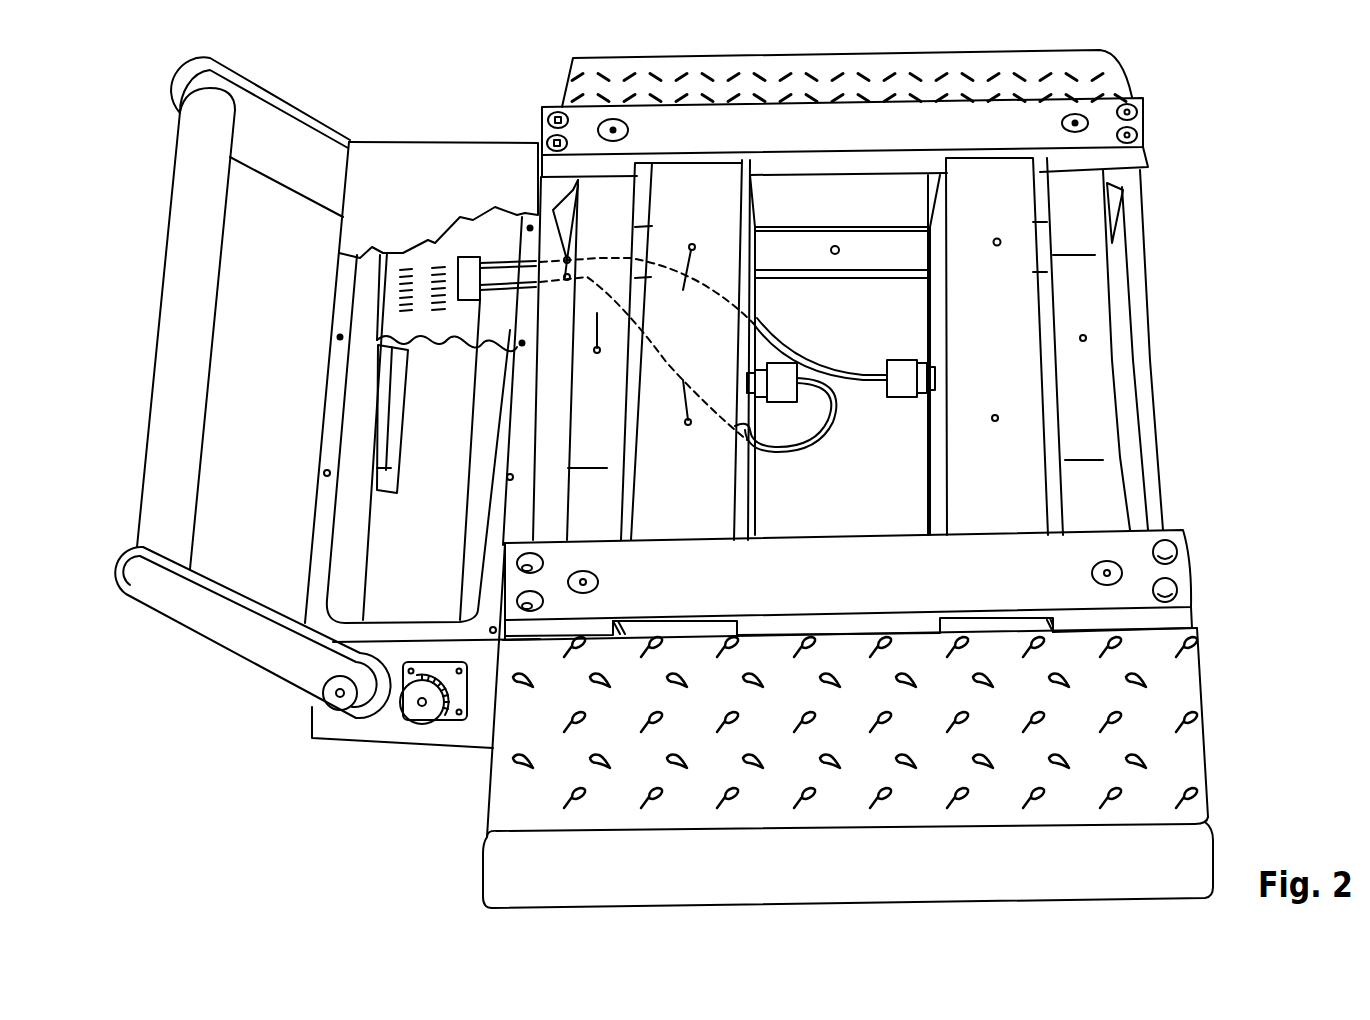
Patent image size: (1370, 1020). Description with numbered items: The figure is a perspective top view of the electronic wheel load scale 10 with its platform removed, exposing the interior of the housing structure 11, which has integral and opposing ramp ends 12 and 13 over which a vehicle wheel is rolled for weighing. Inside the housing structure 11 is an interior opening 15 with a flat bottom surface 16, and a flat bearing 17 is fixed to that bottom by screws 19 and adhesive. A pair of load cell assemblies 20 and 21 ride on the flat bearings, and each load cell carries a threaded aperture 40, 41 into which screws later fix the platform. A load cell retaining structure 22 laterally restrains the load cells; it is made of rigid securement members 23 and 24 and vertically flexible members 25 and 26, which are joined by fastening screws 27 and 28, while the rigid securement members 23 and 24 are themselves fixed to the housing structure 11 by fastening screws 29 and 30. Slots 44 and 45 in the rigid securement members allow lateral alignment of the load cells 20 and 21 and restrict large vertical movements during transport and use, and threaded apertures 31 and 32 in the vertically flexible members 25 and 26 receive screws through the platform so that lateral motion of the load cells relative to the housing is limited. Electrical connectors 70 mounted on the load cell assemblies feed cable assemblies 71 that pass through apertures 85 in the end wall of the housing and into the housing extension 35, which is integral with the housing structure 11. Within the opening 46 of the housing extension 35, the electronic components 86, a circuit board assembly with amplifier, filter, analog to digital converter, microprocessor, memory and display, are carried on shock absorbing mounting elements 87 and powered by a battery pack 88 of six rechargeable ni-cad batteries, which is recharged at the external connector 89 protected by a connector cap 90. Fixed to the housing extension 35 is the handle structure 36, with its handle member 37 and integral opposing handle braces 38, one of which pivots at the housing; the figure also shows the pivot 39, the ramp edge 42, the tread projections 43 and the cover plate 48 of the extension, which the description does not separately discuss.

The wheel load scale 10 is at (1201, 229).
The housing structure 11 is at (1150, 408).
The ramp end 12 is at (818, 55).
The ramp end 13 is at (1190, 807).
The interior opening 15 is at (802, 464).
The flat bottom surface 16 is at (848, 480).
The flat bearing 17 is at (875, 258).
The screws 19 is at (833, 254).
The load cell assembly 20 is at (661, 505).
The load cell assembly 21 is at (989, 480).
The load cell retaining structure 22 is at (1186, 508).
The rigid securement member 23 is at (1130, 100).
The rigid securement member 24 is at (816, 593).
The vertically flexible member 25 is at (583, 425).
The vertically flexible member 26 is at (1093, 300).
The fastening screw 27 is at (629, 130).
The fastening screw 28 is at (1092, 570).
The fastening screws 29 is at (1137, 135).
The fastening screws 30 is at (1178, 590).
The threaded aperture 31 is at (1090, 338).
The threaded aperture 32 is at (602, 318).
The housing extension 35 is at (322, 510).
The handle structure 36 is at (272, 66).
The handle member 37 is at (197, 295).
The handle braces 38 is at (215, 638).
The pivot 39 is at (345, 717).
The threaded aperture 40 is at (995, 246).
The threaded aperture 41 is at (680, 334).
The plate edge 42 is at (1202, 663).
The tread projections 43 is at (1190, 708).
The slot 44 is at (627, 633).
The slot 45 is at (1053, 620).
The opening 46 is at (399, 560).
The cover plate 48 is at (438, 175).
The electrical connectors 70 is at (906, 385).
The cable assemblies 71 is at (860, 383).
The apertures 85 is at (570, 275).
The electronic components 86 is at (450, 356).
The shock absorbing mounting elements 87 is at (398, 423).
The battery pack 88 is at (478, 472).
The external connector 89 is at (470, 734).
The connector cap 90 is at (415, 715).